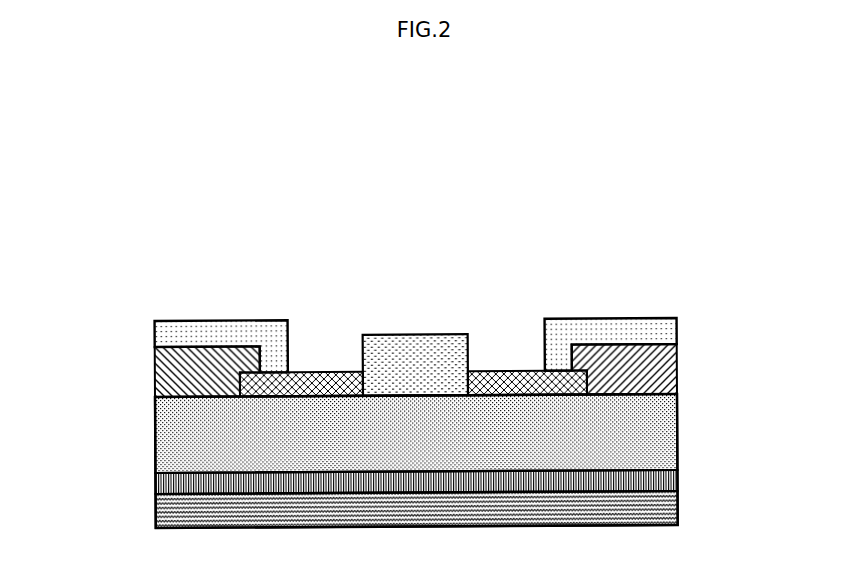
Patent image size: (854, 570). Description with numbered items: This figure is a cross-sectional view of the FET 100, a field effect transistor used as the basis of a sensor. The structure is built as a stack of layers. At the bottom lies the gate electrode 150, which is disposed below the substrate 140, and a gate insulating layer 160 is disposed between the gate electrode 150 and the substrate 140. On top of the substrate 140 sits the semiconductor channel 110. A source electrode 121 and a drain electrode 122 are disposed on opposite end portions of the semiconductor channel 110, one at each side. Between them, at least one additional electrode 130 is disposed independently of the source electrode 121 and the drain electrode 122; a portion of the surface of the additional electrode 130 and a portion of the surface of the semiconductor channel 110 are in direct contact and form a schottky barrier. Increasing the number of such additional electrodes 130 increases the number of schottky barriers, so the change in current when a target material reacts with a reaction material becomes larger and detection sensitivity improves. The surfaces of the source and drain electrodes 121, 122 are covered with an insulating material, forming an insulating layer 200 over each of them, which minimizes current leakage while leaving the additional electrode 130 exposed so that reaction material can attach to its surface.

The FET 100 is at (153, 197).
The semiconductor channel 110 is at (316, 372).
The source electrode 121 is at (153, 373).
The drain electrode 122 is at (680, 367).
The additional electrode 130 is at (418, 348).
The substrate 140 is at (678, 432).
The gate electrode 150 is at (678, 516).
The gate insulating layer 160 is at (678, 481).
The insulating layer 200 is at (245, 320).